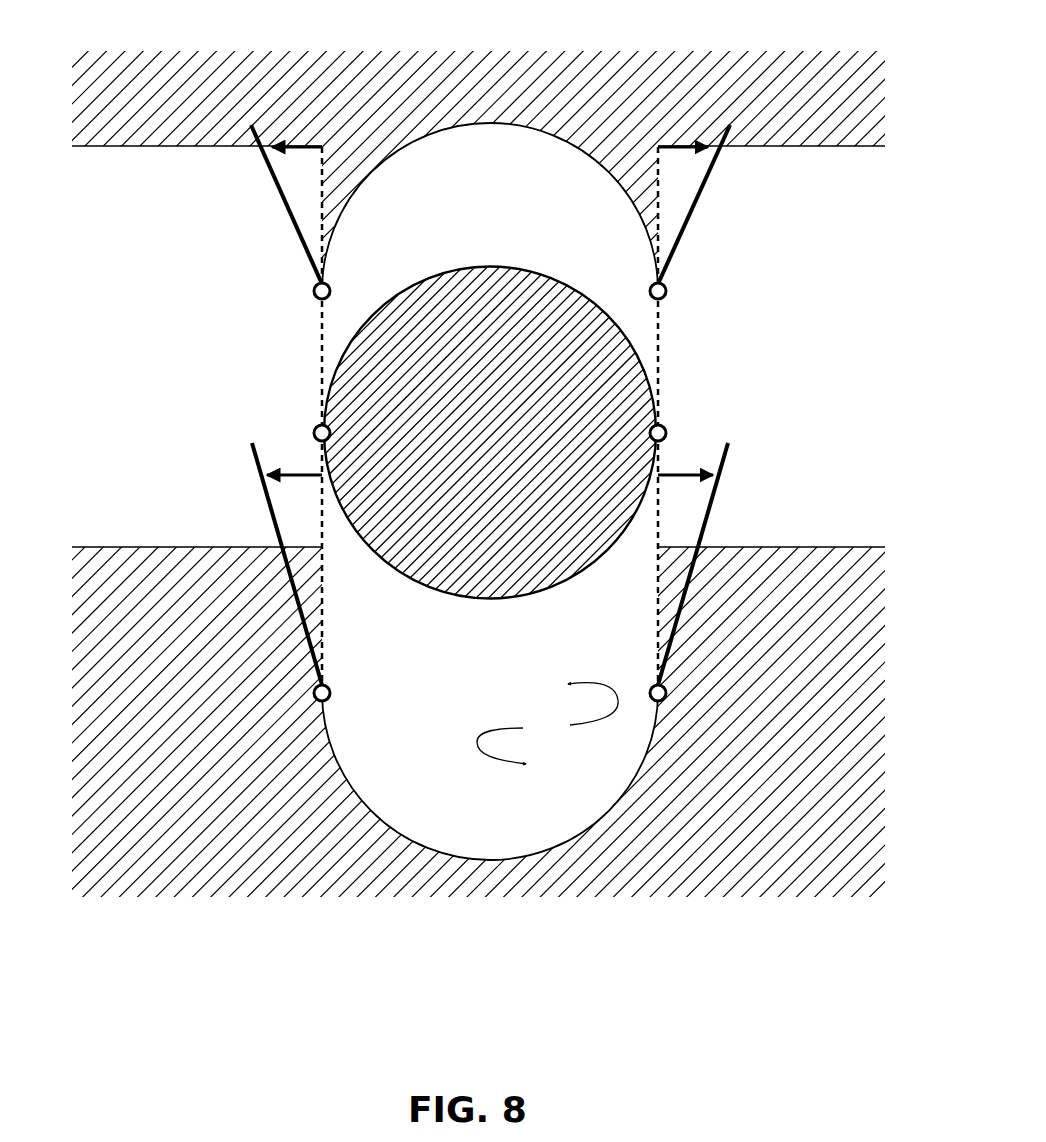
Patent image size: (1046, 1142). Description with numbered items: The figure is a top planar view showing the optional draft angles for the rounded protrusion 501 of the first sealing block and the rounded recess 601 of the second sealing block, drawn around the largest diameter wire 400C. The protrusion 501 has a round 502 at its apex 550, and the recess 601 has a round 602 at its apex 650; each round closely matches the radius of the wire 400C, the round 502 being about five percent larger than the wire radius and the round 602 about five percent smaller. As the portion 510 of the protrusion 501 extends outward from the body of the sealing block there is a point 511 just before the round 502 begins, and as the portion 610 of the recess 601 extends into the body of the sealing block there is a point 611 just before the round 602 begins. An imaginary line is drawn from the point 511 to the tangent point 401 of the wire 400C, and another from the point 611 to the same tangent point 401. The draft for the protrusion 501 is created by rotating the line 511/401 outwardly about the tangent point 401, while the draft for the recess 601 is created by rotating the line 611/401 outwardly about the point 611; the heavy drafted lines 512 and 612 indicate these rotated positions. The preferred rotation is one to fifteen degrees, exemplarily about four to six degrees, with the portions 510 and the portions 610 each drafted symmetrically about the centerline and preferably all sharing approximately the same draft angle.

The rounded protrusion 501 is at (567, 184).
The round 502 is at (490, 104).
The apex 550 is at (502, 122).
The largest diameter wire 400C is at (490, 265).
The tangent point 401 is at (667, 428).
The portion 510 is at (660, 215).
The point 511 is at (313, 297).
The left upper draft line 512 is at (285, 210).
The rounded recess 601 is at (547, 723).
The round 602 is at (416, 830).
The portion 610 is at (322, 535).
The point 611 is at (329, 685).
The lower draft line 612 is at (258, 458).
The apex 650 is at (506, 860).